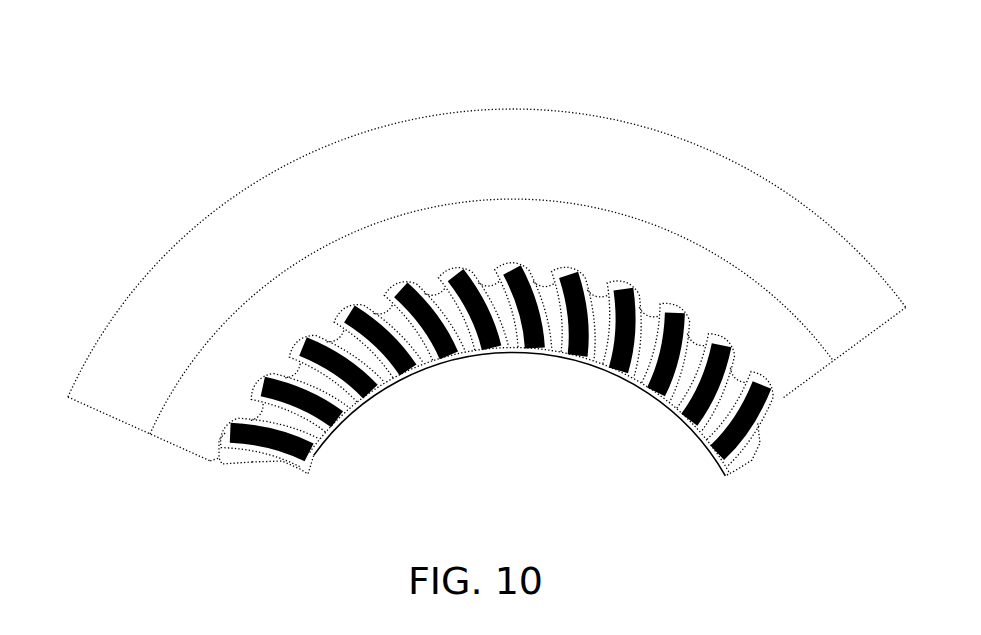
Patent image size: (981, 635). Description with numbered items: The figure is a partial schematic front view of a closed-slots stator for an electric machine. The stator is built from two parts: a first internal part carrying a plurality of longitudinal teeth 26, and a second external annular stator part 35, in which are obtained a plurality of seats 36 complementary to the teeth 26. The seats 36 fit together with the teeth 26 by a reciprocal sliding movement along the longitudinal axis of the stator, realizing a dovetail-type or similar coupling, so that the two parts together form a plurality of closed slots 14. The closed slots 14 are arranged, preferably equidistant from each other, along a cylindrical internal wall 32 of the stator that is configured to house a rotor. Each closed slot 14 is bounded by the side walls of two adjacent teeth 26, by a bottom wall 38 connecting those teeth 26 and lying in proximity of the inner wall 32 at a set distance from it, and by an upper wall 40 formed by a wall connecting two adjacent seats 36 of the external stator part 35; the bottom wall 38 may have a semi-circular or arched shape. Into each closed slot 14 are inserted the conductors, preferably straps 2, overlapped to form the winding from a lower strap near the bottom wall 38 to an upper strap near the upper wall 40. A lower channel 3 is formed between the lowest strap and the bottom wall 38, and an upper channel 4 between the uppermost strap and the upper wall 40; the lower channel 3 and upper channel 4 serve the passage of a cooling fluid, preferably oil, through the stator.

The straps 2 is at (683, 342).
The lower channel 3 is at (693, 423).
The upper channel 4 is at (723, 342).
The closed slots 14 is at (250, 437).
The longitudinal teeth 26 is at (496, 290).
The cylindrical internal wall 32 is at (513, 350).
The second external annular stator part 35 is at (372, 250).
The seats 36 is at (274, 368).
The bottom wall 38 is at (313, 455).
The upper wall 40 is at (225, 433).